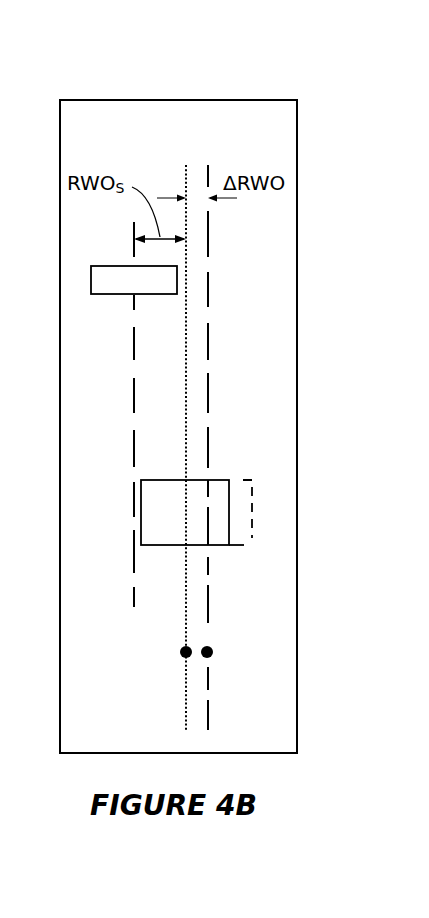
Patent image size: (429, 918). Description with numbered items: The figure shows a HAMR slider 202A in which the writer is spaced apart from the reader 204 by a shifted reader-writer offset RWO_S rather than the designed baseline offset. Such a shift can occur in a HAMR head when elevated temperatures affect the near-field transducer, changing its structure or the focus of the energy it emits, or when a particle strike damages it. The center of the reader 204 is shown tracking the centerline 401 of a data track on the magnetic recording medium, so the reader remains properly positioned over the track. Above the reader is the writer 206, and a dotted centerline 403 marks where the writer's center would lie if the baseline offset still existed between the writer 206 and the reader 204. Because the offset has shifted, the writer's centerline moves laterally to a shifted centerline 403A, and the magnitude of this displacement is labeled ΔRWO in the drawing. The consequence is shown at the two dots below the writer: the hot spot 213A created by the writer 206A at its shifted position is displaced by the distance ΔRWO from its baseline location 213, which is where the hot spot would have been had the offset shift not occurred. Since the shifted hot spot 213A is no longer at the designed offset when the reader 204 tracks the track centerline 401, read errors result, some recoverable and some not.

The slider 202A is at (240, 100).
The reader 204 is at (110, 295).
The writer 206 is at (233, 547).
The writer 206A is at (220, 547).
The centerline 401 is at (131, 597).
The shifted centerline 403A is at (184, 701).
The centerline 403 is at (211, 701).
The hot spot 213A is at (181, 653).
The baseline location 213 is at (213, 653).